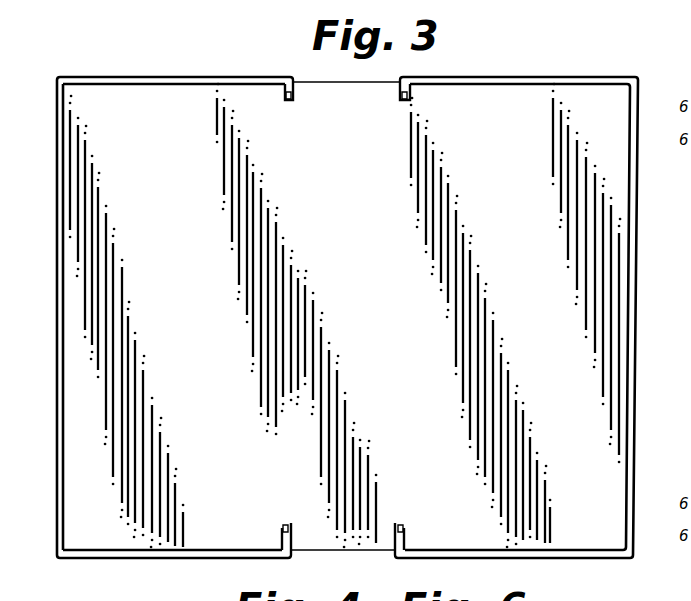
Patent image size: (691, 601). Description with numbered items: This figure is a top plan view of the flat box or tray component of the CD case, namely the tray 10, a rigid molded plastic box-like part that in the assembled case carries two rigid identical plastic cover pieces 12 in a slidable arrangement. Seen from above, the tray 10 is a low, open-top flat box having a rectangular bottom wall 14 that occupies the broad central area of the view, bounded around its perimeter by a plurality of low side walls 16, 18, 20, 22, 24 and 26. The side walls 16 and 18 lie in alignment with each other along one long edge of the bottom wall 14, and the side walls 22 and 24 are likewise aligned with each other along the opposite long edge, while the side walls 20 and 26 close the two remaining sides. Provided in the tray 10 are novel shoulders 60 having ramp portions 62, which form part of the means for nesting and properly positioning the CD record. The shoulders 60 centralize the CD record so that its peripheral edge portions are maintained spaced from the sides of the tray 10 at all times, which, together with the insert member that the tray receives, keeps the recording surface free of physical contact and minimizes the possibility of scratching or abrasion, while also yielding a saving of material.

The tray 10 is at (548, 33).
The cover pieces 12 is at (40, 592).
The bottom wall 14 is at (345, 315).
The side wall 16 is at (200, 76).
The side wall 18 is at (476, 76).
The side wall 20 is at (640, 278).
The side wall 22 is at (561, 557).
The side wall 24 is at (217, 557).
The side wall 26 is at (57, 376).
The shoulders 60 is at (290, 94).
The ramp portions 62 is at (295, 100).